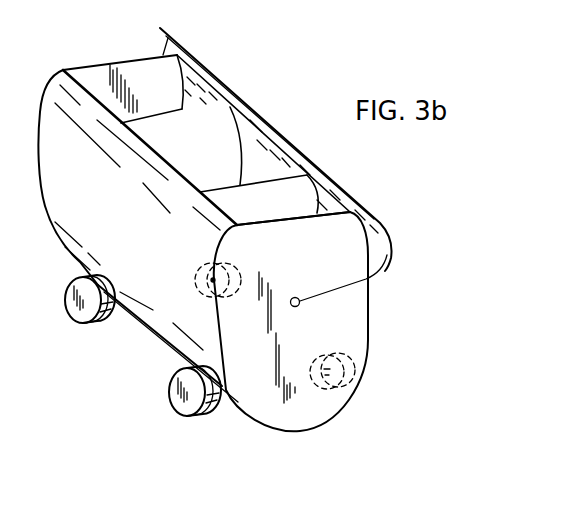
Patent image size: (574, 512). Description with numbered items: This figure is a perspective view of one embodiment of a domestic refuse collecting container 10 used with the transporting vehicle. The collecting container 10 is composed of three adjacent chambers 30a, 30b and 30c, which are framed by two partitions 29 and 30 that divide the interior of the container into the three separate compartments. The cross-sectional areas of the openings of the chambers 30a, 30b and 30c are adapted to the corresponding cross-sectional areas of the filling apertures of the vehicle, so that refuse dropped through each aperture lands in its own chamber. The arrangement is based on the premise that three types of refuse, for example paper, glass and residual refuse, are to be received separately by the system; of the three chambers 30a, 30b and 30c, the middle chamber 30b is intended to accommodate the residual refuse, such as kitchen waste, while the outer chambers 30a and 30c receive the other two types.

The collecting container 10 is at (272, 80).
The partition 29 is at (216, 164).
The partition 30 is at (297, 212).
The chamber 30a is at (143, 92).
The middle chamber 30b is at (165, 140).
The chamber 30c is at (238, 207).